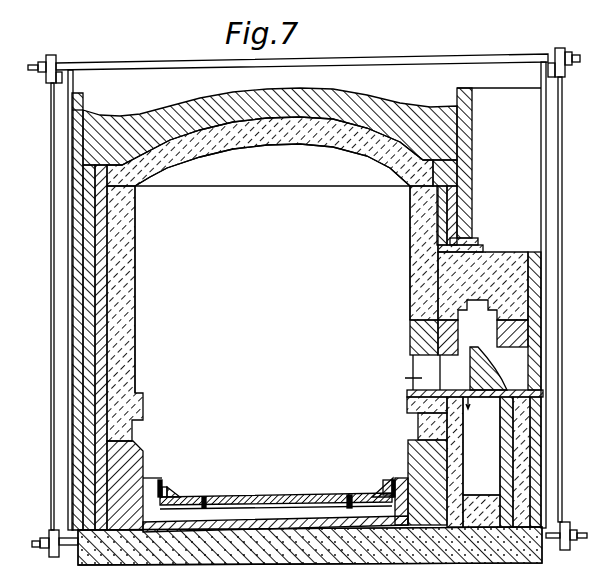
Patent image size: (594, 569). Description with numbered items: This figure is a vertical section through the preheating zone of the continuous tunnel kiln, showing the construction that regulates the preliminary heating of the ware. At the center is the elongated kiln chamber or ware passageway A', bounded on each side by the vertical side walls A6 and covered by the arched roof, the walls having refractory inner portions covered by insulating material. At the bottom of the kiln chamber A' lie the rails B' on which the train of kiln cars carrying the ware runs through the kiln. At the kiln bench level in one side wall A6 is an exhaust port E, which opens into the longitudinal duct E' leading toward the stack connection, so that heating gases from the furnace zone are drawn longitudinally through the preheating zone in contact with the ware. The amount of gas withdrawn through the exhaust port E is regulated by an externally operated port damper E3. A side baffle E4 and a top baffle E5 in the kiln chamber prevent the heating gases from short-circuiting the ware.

The kiln chamber A' is at (272, 268).
The top baffles E5 is at (298, 187).
The vertical side walls A6 is at (412, 243).
The side baffles E4 is at (408, 282).
The exhaust ports E is at (454, 367).
The port dampers E3 is at (476, 350).
The longitudinal duct E' is at (481, 446).
The rails B' is at (276, 485).